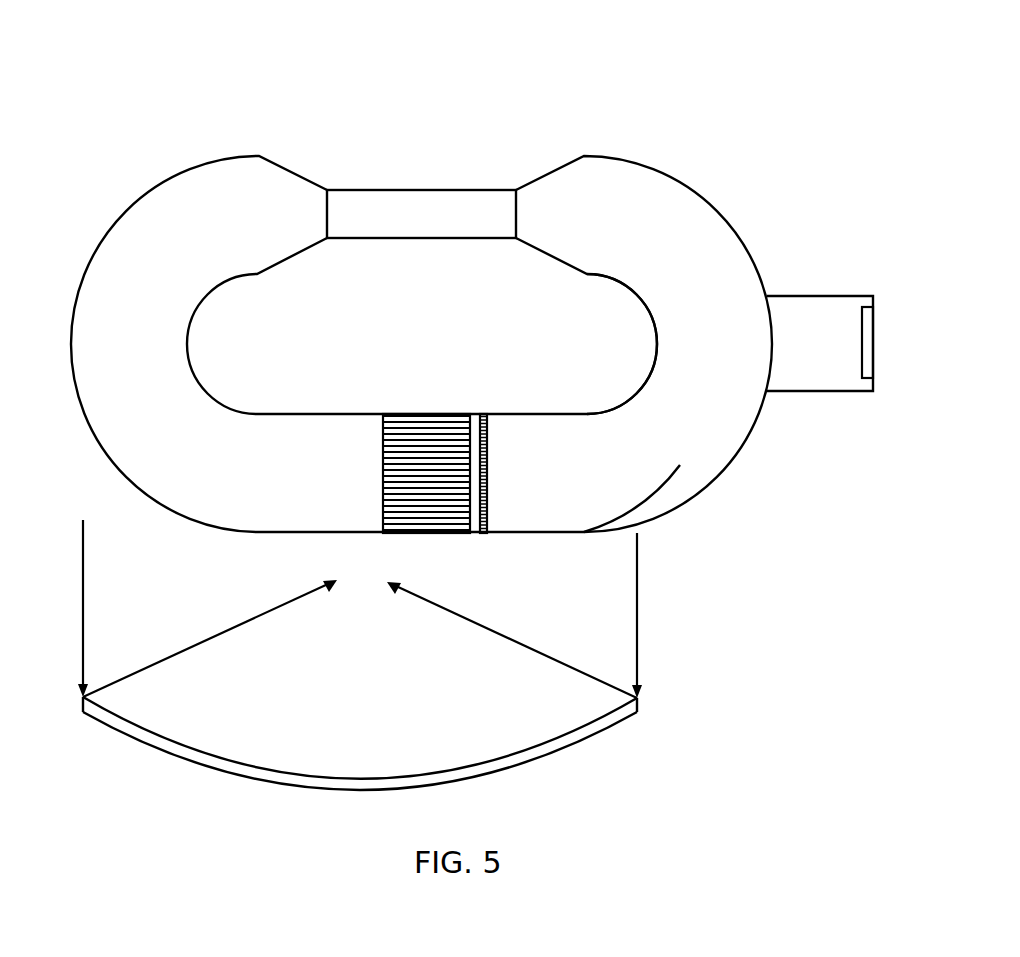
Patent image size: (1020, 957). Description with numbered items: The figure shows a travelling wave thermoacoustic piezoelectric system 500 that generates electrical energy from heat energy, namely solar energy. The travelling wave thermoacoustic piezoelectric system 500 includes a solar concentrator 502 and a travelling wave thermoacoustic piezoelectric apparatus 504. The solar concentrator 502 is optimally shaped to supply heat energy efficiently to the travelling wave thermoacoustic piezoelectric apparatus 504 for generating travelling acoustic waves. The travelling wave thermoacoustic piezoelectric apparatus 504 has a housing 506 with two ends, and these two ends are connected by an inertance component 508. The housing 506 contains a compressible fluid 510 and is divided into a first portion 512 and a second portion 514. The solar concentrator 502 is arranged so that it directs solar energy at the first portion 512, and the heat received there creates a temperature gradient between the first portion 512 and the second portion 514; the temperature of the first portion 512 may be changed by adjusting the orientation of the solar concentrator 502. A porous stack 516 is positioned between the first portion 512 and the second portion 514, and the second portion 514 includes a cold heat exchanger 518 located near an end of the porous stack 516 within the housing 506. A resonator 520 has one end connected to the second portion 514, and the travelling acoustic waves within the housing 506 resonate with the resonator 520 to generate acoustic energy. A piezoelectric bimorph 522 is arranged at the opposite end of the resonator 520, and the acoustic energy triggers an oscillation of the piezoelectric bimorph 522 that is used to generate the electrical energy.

The travelling wave thermoacoustic piezoelectric system 500 is at (754, 80).
The solar concentrator 502 is at (610, 728).
The travelling wave thermoacoustic piezoelectric apparatus 504 is at (224, 130).
The housing 506 is at (727, 218).
The inertance component 508 is at (421, 214).
The compressible fluid 510 is at (707, 466).
The first portion 512 is at (364, 344).
The second portion 514 is at (651, 344).
The porous stack 516 is at (410, 423).
The cold heat exchanger 518 is at (495, 418).
The resonator 520 is at (847, 324).
The piezoelectric bimorph 522 is at (875, 317).